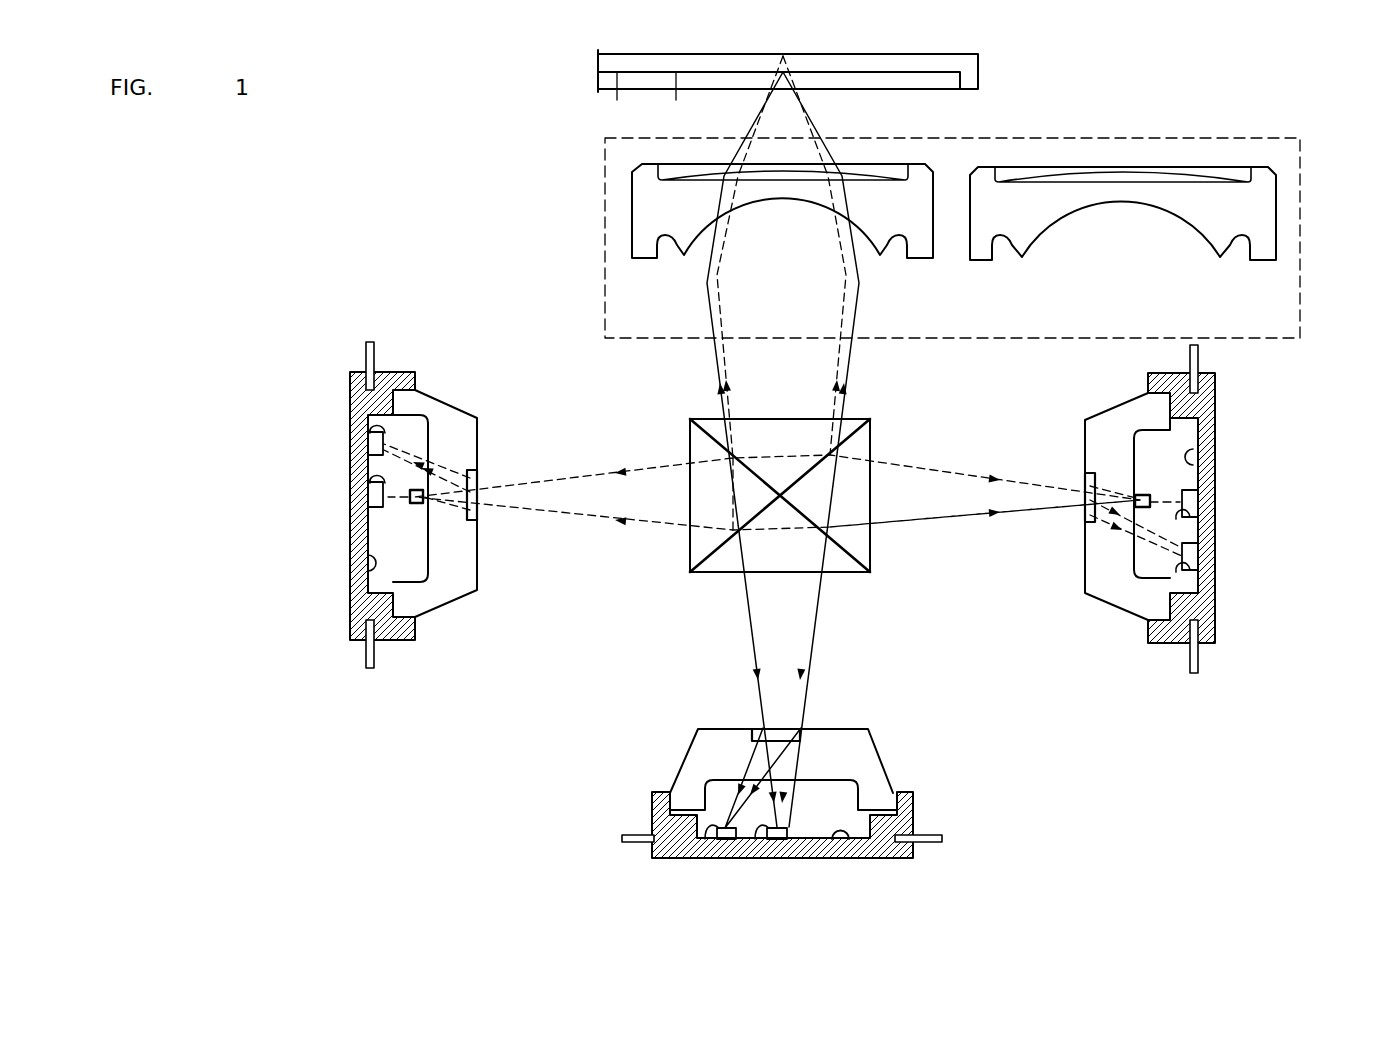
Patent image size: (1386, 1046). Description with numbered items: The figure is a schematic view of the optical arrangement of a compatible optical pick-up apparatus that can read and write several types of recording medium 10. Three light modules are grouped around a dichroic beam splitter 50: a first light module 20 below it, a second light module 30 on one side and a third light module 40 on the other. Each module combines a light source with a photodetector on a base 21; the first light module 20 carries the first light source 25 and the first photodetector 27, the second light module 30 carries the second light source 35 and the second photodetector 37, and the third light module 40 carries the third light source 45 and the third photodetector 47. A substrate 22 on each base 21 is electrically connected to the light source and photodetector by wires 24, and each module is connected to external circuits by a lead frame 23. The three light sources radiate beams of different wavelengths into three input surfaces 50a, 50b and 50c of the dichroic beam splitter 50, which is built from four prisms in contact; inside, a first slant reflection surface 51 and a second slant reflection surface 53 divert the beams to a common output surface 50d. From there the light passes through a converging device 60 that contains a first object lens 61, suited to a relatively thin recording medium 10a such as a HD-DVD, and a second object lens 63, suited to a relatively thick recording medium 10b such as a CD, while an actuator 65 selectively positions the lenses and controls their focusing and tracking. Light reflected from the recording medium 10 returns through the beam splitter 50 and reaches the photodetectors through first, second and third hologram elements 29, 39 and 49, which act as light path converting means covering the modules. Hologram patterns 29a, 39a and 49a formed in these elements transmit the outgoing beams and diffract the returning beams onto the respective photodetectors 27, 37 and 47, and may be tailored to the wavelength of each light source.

The recording medium 10 is at (970, 48).
The relatively thin recording medium 10a is at (677, 101).
The relatively thick recording medium 10b is at (621, 101).
The first light module 20 is at (733, 788).
The base 21 is at (682, 850).
The substrate 22 is at (848, 845).
The lead frame 23 is at (920, 845).
The wire 24 is at (775, 840).
The first light source 25 is at (795, 853).
The first photodetector 27 is at (722, 840).
The first hologram element 29 is at (712, 715).
The first hologram pattern 29a is at (800, 740).
The second light module 30 is at (426, 459).
The second light source 35 is at (405, 498).
The second photodetector 37 is at (365, 440).
The second hologram element 39 is at (488, 588).
The second hologram pattern 39a is at (480, 518).
The third light module 40 is at (1131, 535).
The third light source 45 is at (1202, 498).
The third photodetector 47 is at (1208, 562).
The third hologram element 49 is at (1075, 568).
The third hologram pattern 49a is at (1083, 520).
The dichroic beam splitter 50 is at (779, 495).
The first input surface 50a is at (830, 575).
The second input surface 50b is at (688, 545).
The third input surface 50c is at (872, 545).
The output surface 50d is at (781, 417).
The first slant reflection surface 51 is at (862, 439).
The second slant reflection surface 53 is at (700, 440).
The converging device 60 is at (1212, 130).
The first object lens 61 is at (632, 212).
The second object lens 63 is at (1278, 215).
The actuator 65 is at (1302, 263).